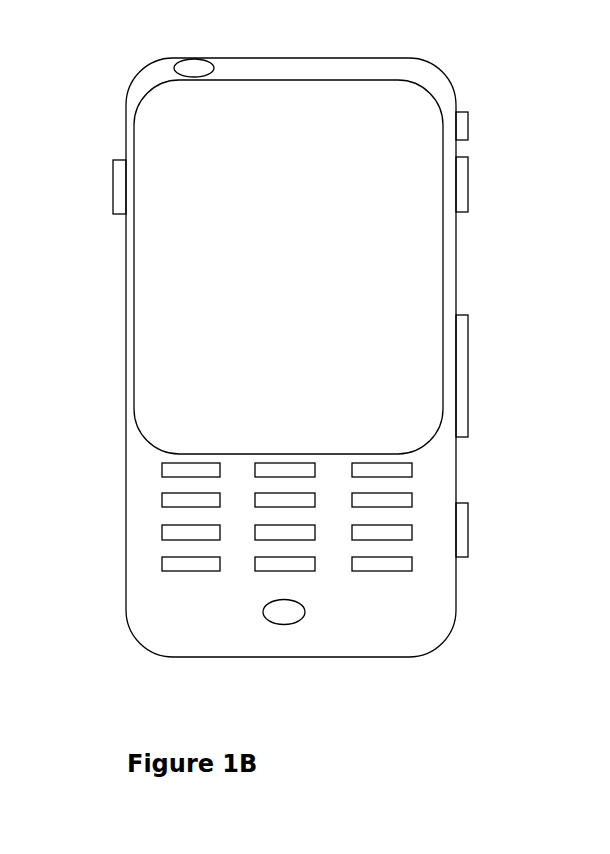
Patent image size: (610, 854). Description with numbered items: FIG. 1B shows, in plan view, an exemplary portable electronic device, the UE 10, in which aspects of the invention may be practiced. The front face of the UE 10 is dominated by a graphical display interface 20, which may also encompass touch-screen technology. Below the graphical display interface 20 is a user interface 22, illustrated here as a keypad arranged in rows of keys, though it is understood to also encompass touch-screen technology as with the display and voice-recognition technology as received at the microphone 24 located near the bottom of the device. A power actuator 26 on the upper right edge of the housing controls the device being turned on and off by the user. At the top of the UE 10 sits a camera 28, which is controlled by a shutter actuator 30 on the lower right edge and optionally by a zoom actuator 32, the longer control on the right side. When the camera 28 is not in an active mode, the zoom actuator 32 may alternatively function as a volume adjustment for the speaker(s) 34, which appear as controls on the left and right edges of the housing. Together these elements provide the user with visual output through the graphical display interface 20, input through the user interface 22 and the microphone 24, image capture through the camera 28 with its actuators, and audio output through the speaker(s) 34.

The UE 10 is at (457, 668).
The graphical display interface 20 is at (145, 290).
The user interface 22 is at (160, 517).
The microphone 24 is at (284, 625).
The power actuator 26 is at (470, 127).
The camera 28 is at (194, 60).
The shutter actuator 30 is at (468, 512).
The zoom actuator 32 is at (470, 342).
The speaker 34 is at (113, 157).